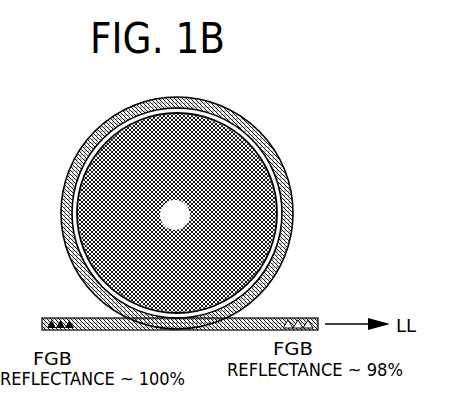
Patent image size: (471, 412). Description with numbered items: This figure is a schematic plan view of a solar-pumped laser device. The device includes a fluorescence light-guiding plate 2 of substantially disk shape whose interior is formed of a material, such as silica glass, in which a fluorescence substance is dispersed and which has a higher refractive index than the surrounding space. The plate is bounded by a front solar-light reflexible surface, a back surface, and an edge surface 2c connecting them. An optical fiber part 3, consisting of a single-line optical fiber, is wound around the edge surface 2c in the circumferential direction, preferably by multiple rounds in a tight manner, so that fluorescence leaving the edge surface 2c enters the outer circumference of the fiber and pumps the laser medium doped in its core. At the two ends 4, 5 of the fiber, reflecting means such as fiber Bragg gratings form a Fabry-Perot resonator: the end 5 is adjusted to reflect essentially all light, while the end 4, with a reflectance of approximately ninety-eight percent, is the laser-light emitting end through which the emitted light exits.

The fluorescence light-guiding plate 2 is at (169, 225).
The edge surface 2c is at (287, 178).
The optical fiber part 3 is at (228, 104).
The end 4 is at (292, 319).
The end 5 is at (57, 318).